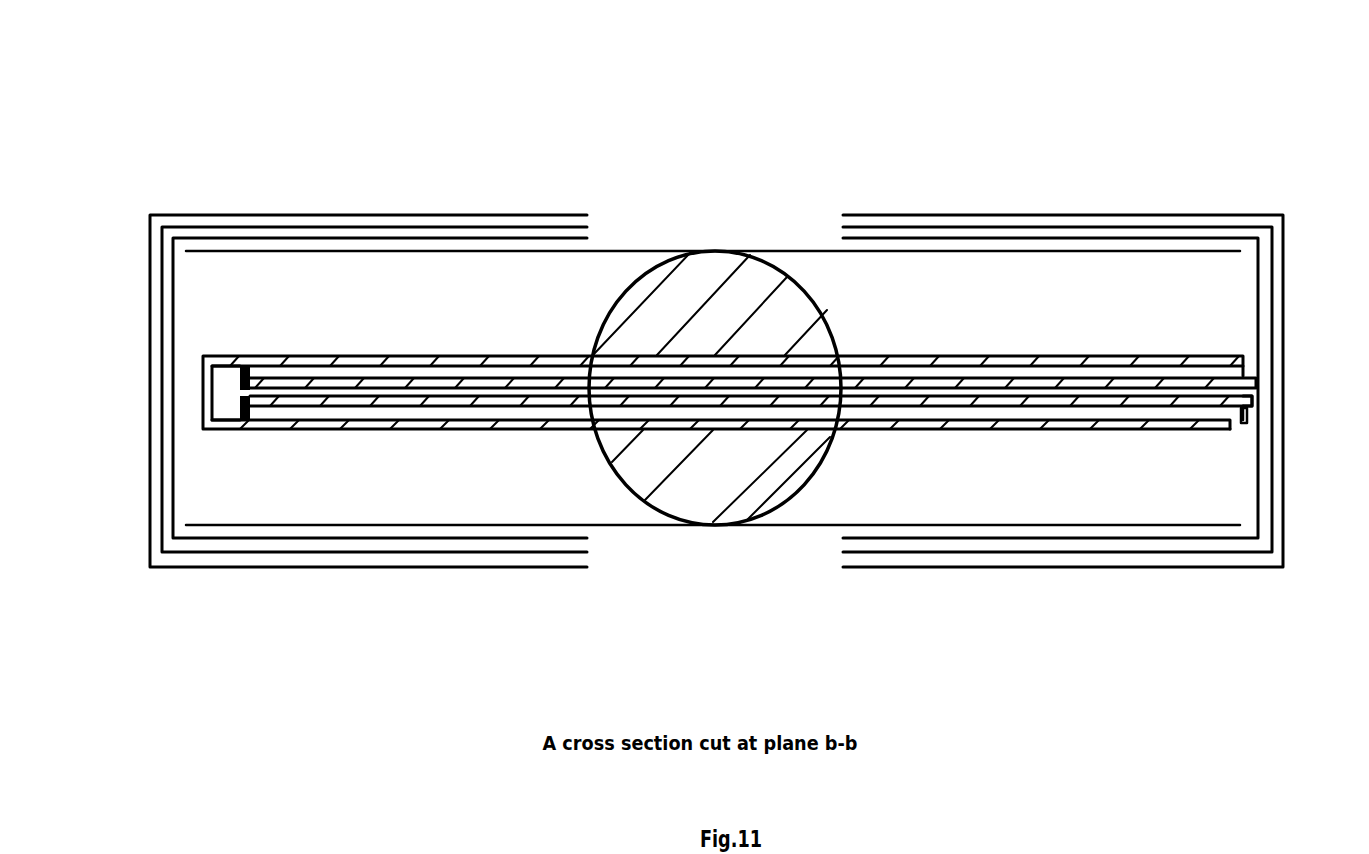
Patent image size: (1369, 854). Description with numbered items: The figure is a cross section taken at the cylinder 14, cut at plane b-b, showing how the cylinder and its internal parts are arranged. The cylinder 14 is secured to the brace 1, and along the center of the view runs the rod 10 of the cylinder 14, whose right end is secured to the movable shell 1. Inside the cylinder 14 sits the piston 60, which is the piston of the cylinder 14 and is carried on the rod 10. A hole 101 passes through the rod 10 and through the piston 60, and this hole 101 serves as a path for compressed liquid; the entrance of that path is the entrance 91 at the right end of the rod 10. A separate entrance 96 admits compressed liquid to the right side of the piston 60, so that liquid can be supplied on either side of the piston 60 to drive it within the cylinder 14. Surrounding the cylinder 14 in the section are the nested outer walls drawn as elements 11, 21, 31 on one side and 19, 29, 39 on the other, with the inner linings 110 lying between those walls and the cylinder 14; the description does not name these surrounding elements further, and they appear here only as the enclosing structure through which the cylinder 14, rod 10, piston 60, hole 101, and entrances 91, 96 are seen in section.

The brace 1 is at (765, 442).
The rod 10 is at (1162, 383).
The inner housing wall 11 is at (920, 238).
The cylinder 14 is at (978, 427).
The inner housing wall 19 is at (247, 240).
The middle housing wall 21 is at (1033, 227).
The middle housing wall 29 is at (370, 227).
The outer housing wall 31 is at (1143, 213).
The outer housing wall 39 is at (458, 217).
The piston 60 is at (247, 407).
The entrance of the path 91 is at (1252, 398).
The entrance for compressed liquid 96 is at (1232, 425).
The hole 101 is at (272, 395).
The inner lining 110 is at (562, 248).